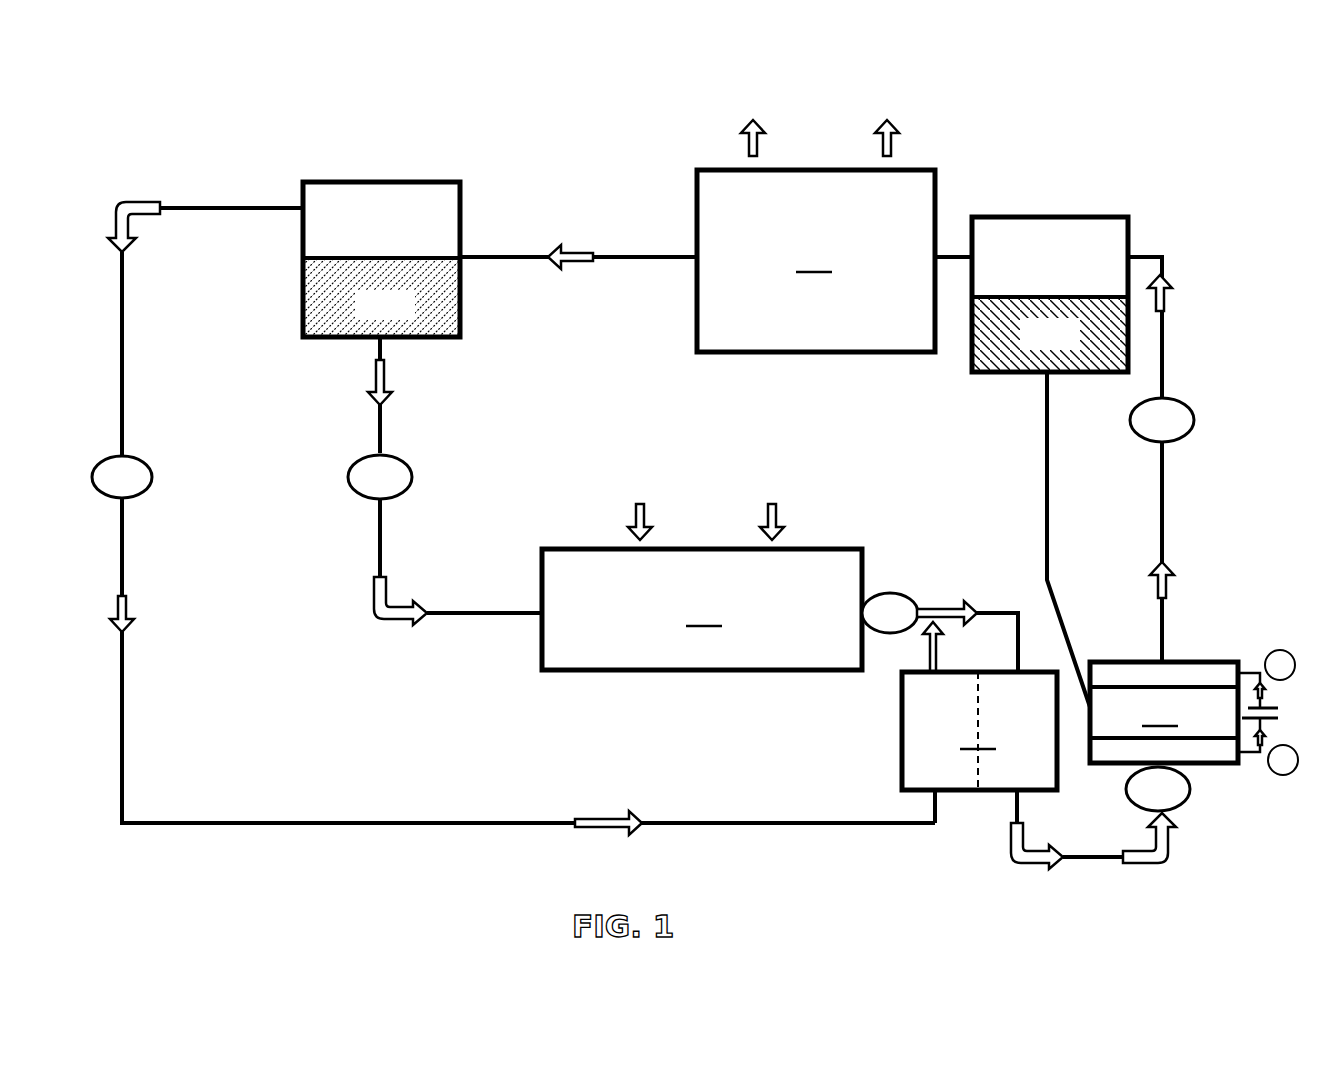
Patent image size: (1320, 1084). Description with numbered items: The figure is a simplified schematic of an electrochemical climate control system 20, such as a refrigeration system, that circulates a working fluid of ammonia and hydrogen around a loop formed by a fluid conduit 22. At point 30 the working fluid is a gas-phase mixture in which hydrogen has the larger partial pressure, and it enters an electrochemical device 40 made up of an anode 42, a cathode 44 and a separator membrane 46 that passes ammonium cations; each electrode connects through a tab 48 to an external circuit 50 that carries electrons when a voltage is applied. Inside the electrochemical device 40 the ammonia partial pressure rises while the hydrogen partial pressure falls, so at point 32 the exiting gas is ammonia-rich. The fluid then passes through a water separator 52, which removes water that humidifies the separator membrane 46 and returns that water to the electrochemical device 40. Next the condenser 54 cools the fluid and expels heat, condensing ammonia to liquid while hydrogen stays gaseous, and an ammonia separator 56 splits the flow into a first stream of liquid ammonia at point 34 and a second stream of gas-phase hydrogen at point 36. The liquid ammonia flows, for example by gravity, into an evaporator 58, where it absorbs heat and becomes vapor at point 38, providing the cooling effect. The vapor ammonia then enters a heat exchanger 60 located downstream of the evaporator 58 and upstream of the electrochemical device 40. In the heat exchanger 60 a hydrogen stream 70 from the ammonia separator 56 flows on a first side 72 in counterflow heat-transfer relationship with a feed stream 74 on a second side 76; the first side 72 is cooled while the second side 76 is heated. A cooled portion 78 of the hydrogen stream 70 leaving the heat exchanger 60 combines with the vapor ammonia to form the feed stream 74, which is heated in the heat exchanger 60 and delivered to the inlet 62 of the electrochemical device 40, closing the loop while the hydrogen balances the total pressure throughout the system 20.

The electrochemical climate control system 20 is at (200, 118).
The fluid conduit 22 is at (243, 207).
The point 30 is at (1173, 801).
The point 32 is at (1177, 432).
The point 34 is at (395, 489).
The point 36 is at (137, 489).
The point 38 is at (905, 625).
The electrochemical device 40 is at (1185, 676).
The anode 42 is at (1215, 750).
The cathode 44 is at (1120, 676).
The separator membrane 46 is at (1164, 602).
The tab 48 is at (1247, 673).
The external circuit 50 is at (1268, 705).
The water separator 52 is at (1048, 216).
The condenser 54 is at (697, 236).
The ammonia separator 56 is at (397, 180).
The evaporator 58 is at (702, 587).
The heat exchanger 60 is at (979, 731).
The inlet 62 is at (1158, 768).
The hydrogen stream 70 is at (882, 826).
The first side 72 is at (952, 800).
The feed stream 74 is at (1022, 645).
The second side 76 is at (1000, 800).
The portion 78 is at (926, 646).